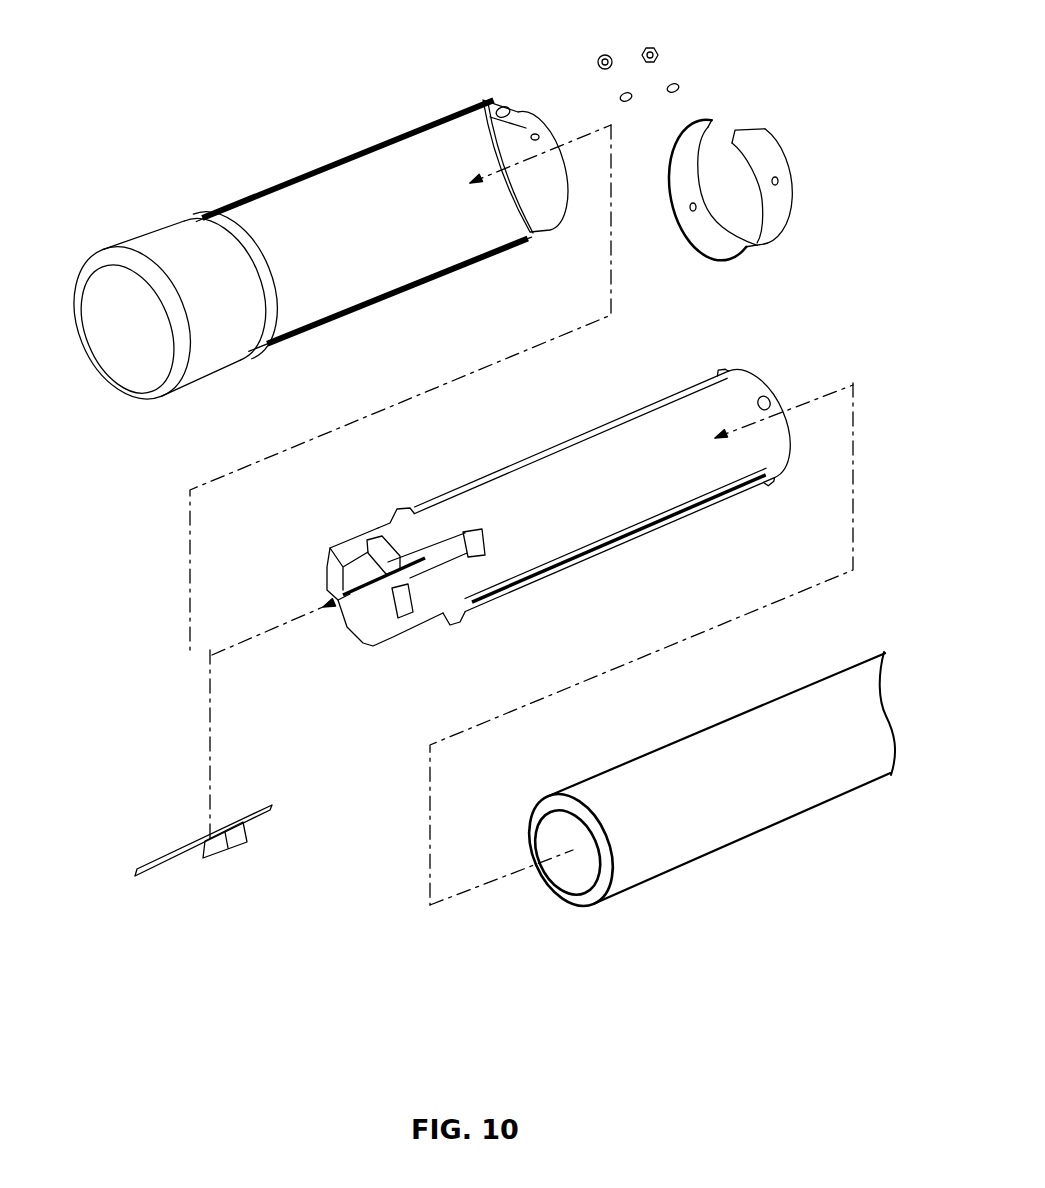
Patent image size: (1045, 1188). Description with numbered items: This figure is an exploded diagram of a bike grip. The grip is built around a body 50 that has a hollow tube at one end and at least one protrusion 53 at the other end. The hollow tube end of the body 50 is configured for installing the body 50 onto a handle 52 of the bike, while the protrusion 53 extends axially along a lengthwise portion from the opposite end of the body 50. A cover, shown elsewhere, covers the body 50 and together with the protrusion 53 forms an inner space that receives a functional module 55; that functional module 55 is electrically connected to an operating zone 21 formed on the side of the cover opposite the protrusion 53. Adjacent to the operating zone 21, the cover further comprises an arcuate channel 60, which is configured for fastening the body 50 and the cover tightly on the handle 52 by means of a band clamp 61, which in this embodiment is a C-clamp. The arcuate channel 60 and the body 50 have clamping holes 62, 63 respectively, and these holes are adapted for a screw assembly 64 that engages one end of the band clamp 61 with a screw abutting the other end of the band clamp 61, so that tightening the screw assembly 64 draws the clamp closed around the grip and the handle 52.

The body 50 is at (307, 200).
The operating zone 21 is at (505, 105).
The clamping hole 62 is at (540, 137).
The screw assembly 64 is at (672, 42).
The band clamp 61 is at (762, 155).
The arcuate channel 60 is at (548, 196).
The clamping hole 63 is at (773, 402).
The protrusion 53 is at (327, 557).
The handle 52 is at (771, 793).
The functional module 55 is at (140, 856).